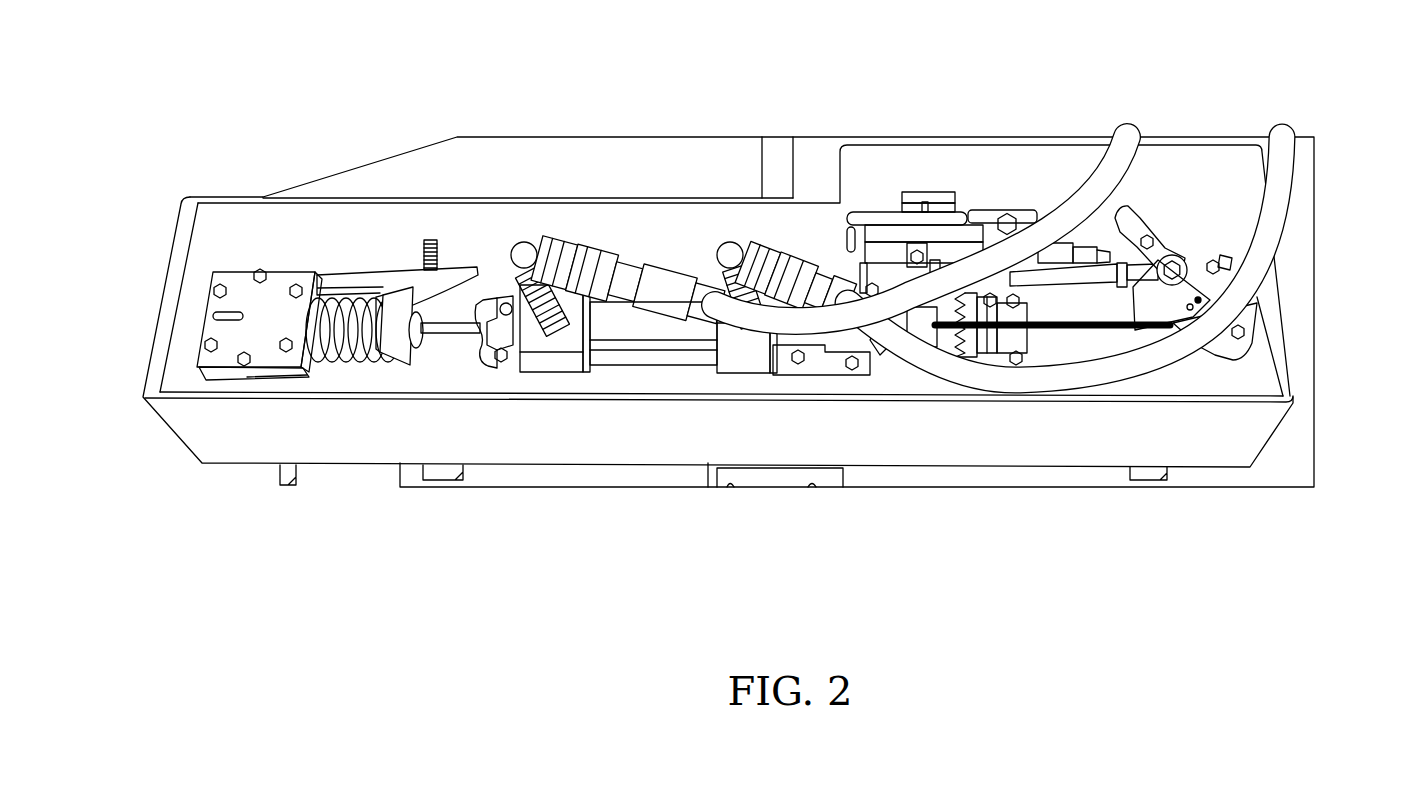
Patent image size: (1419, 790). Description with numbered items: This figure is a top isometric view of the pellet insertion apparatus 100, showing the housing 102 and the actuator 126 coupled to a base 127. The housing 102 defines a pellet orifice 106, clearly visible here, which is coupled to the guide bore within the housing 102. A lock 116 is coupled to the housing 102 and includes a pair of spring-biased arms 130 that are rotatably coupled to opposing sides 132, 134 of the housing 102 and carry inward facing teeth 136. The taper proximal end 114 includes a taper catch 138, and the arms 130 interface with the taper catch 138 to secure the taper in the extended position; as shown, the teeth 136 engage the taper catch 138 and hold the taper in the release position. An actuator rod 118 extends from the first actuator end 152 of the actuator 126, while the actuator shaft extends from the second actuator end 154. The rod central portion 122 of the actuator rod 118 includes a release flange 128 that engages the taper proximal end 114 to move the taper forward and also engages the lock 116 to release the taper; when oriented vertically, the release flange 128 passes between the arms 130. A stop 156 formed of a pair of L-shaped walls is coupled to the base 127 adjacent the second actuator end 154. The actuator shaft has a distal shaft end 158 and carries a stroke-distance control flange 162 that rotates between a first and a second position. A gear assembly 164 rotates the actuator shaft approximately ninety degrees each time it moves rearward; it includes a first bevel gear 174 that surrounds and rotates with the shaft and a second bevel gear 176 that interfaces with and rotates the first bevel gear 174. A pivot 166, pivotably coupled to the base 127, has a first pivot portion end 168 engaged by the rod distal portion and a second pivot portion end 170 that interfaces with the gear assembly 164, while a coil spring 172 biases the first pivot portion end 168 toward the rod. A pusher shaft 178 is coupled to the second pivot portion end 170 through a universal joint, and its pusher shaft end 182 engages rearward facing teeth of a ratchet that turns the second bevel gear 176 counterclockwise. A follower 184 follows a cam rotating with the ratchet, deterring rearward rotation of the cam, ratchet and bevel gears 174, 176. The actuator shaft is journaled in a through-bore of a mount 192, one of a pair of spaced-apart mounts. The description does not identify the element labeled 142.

The pellet insertion apparatus 100 is at (616, 74).
The housing 102 is at (283, 283).
The pellet orifice 106 is at (213, 316).
The taper proximal end 114 is at (398, 343).
The lock 116 is at (452, 262).
The actuator rod 118 is at (440, 335).
The rod central portion 122 is at (565, 262).
The actuator 126 is at (623, 333).
The base 127 is at (682, 438).
The release flange 128 is at (495, 295).
The spring-biased arms 130 is at (435, 268).
The opposing side of the housing 132 is at (205, 372).
The opposing side of the housing 134 is at (240, 274).
The inward facing teeth 136 is at (393, 290).
The taper catch 138 is at (435, 350).
The compression spring 142 is at (323, 350).
The first actuator end 152 is at (555, 365).
The second actuator end 154 is at (767, 357).
The stop 156 is at (833, 357).
The distal shaft end 158 is at (1160, 330).
The stroke-distance control flange 162 is at (912, 347).
The gear assembly 164 is at (973, 198).
The pivot 166 is at (1200, 297).
The first pivot portion end 168 is at (1250, 333).
The second pivot portion end 170 is at (1200, 282).
The spring 172 is at (1058, 335).
The first bevel gear 174 is at (972, 362).
The second bevel gear 176 is at (898, 232).
The pusher shaft 178 is at (1063, 230).
The pusher shaft end 182 is at (940, 213).
The follower 184 is at (1005, 214).
The mount 192 is at (847, 236).